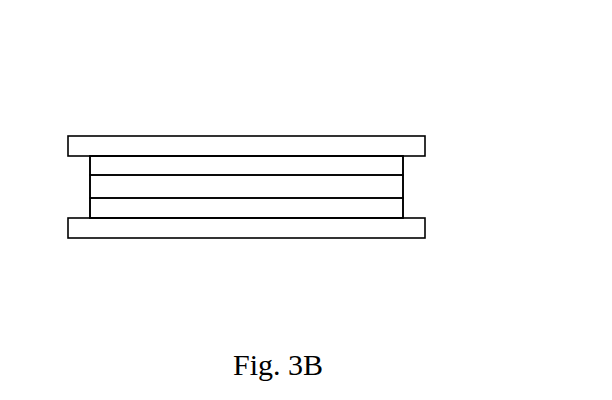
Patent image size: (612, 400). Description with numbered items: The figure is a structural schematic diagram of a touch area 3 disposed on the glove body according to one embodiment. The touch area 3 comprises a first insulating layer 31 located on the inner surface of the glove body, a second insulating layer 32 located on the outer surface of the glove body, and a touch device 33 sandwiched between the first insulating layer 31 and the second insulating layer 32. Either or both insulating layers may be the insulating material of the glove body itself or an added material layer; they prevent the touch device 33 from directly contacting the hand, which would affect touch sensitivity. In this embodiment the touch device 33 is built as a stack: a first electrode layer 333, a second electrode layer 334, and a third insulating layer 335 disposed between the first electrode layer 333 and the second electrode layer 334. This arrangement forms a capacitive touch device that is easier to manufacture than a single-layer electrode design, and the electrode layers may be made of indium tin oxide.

The touch area 3 is at (290, 122).
The first insulating layer 31 is at (427, 228).
The second insulating layer 32 is at (407, 143).
The touch device 33 is at (311, 140).
The first electrode layer 333 is at (147, 208).
The second electrode layer 334 is at (338, 170).
The third insulating layer 335 is at (242, 190).